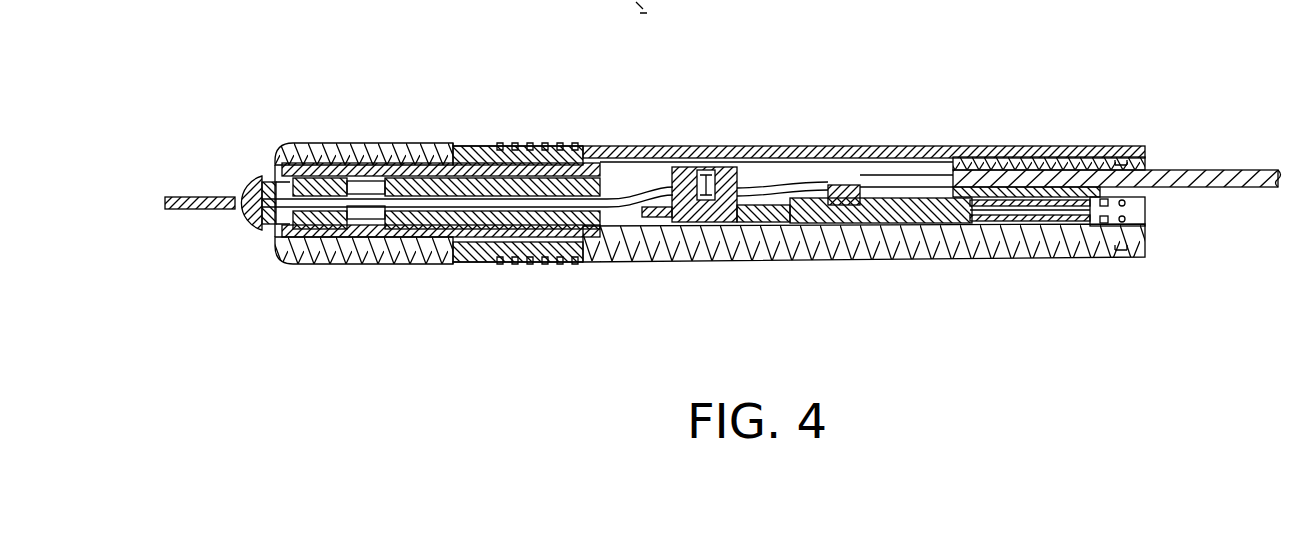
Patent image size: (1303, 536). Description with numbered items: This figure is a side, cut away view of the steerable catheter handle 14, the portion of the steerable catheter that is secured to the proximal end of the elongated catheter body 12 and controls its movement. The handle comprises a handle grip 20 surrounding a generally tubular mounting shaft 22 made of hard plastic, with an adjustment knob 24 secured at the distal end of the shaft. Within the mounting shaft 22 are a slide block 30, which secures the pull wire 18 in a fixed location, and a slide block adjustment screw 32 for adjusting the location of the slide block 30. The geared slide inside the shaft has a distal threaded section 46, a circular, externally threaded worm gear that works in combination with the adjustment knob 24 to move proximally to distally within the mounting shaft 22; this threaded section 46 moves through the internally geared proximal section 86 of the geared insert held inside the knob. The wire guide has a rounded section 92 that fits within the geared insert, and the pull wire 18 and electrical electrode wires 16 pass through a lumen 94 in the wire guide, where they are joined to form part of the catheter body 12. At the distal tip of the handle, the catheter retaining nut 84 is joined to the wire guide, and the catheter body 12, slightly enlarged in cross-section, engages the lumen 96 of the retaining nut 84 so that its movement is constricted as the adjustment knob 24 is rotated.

The elongated catheter body 12 is at (165, 194).
The steerable catheter handle 14 is at (1148, 99).
The electrical electrode wires 16 is at (915, 177).
The pull wire 18 is at (652, 200).
The handle grip 20 is at (797, 148).
The mounting shaft 22 is at (990, 237).
The adjustment knob 24 is at (405, 140).
The slide block 30 is at (687, 175).
The slide block adjustment screw 32 is at (883, 190).
The distal threaded section 46 is at (458, 220).
The catheter retaining nut 84 is at (250, 185).
The proximal section of the geared insert 86 is at (535, 228).
The rounded section 92 is at (382, 263).
The lumen 94 is at (310, 148).
The lumen 96 is at (229, 202).